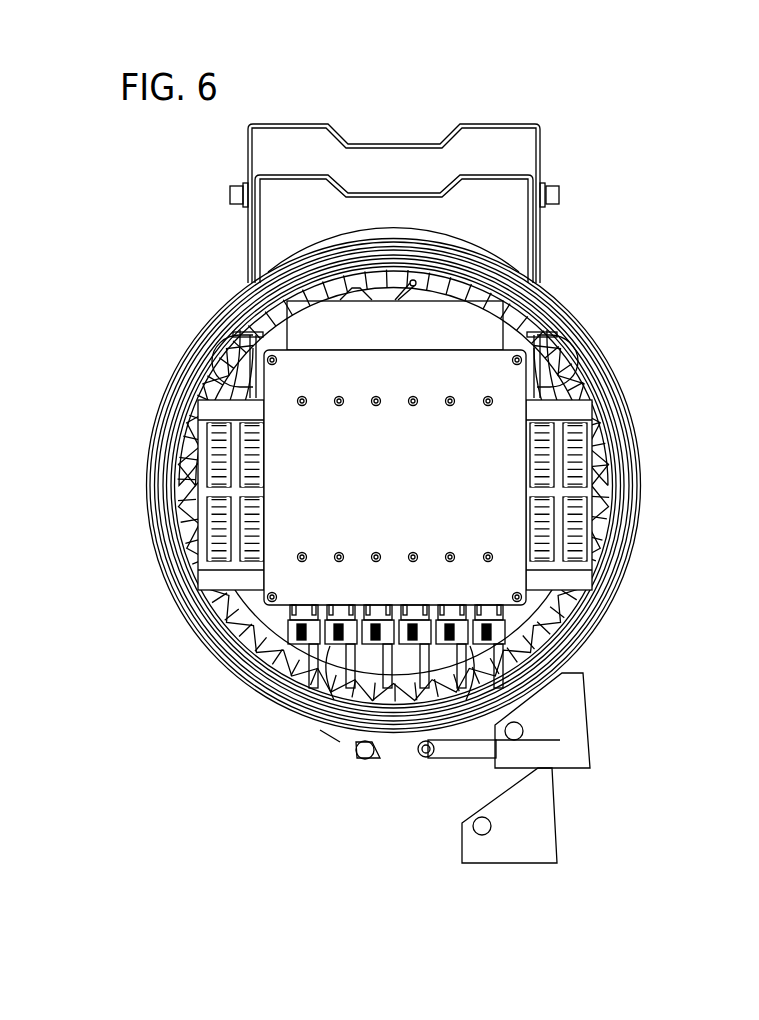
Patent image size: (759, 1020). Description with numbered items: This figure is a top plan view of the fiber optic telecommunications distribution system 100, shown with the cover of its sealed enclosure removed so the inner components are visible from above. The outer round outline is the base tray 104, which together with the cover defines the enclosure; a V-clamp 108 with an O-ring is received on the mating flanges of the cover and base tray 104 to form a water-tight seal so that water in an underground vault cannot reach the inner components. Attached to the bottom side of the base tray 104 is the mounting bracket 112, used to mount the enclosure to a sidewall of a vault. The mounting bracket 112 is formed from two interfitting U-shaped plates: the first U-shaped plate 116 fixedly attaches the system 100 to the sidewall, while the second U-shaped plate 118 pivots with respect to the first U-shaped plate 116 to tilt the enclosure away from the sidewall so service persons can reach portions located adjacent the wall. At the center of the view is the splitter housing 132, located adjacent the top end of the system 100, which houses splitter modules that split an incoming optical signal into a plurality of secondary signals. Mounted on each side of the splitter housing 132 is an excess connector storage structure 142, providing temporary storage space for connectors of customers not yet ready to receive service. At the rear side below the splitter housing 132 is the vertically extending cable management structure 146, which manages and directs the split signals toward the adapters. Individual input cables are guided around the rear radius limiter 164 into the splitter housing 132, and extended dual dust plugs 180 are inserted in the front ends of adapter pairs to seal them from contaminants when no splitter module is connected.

The fiber optic telecommunications distribution system 100 is at (646, 214).
The base tray 104 is at (613, 594).
The V-clamp 108 is at (572, 724).
The mounting bracket 112 is at (536, 262).
The first U-shaped plate 116 is at (537, 135).
The second U-shaped plate 118 is at (500, 178).
The splitter housing 132 is at (513, 432).
The excess connector storage structure 142 is at (588, 482).
The vertically extending cable management structure 146 is at (577, 352).
The rear radius limiter 164 is at (493, 318).
The extended dual dust plug 180 is at (386, 660).